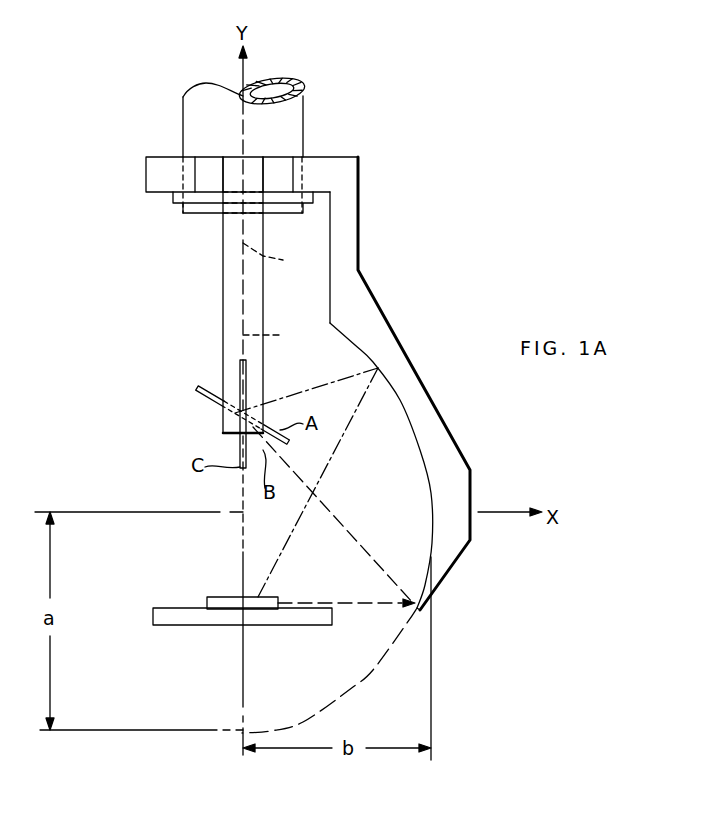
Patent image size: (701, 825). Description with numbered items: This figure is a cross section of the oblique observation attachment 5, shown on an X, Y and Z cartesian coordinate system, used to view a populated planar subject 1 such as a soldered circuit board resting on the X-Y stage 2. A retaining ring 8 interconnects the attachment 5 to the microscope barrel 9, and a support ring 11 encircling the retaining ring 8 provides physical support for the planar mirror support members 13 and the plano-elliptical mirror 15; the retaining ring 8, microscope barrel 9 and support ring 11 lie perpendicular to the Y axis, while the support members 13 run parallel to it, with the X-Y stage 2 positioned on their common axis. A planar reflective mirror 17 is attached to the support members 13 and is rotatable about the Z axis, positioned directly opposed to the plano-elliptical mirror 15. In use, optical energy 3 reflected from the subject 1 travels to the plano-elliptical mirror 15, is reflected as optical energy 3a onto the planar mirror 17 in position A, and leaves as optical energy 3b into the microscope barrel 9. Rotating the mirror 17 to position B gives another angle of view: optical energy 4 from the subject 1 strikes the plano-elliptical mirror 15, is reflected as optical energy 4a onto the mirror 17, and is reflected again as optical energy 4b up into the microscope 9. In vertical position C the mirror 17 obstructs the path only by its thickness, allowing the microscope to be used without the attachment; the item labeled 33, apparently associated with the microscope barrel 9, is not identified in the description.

The populated planar subject 1 is at (210, 597).
The X-Y stage 2 is at (205, 625).
The optical energy 3 is at (363, 418).
The optical energy 3a is at (340, 380).
The optical energy 3b is at (276, 257).
The optical energy 4 is at (358, 604).
The optical energy 4a is at (370, 552).
The optical energy 4b is at (275, 335).
The oblique observation attachment 5 is at (414, 194).
The retaining ring 8 is at (188, 213).
The microscope barrel 9 is at (293, 117).
The support ring 11 is at (148, 180).
The planar mirror support members 13 is at (223, 303).
The plano-elliptical mirror 15 is at (410, 420).
The planar reflective mirror 17 is at (203, 393).
The optical fiber bundle 33 is at (243, 113).